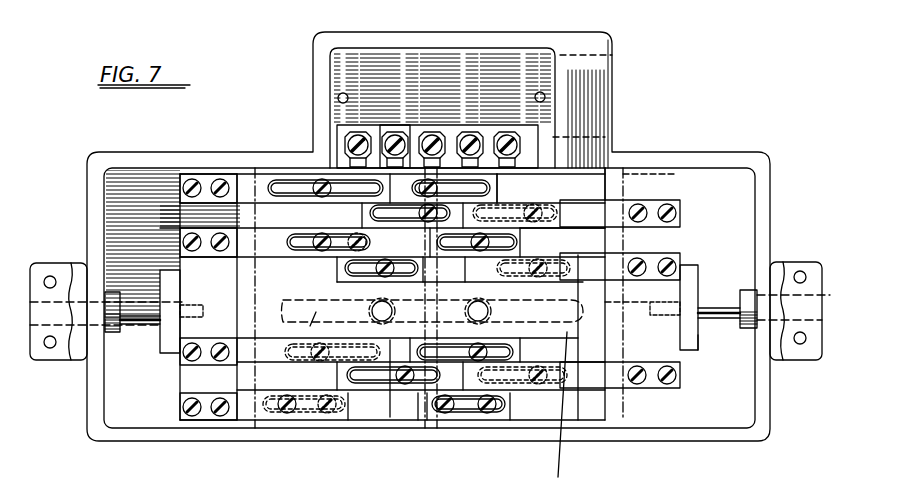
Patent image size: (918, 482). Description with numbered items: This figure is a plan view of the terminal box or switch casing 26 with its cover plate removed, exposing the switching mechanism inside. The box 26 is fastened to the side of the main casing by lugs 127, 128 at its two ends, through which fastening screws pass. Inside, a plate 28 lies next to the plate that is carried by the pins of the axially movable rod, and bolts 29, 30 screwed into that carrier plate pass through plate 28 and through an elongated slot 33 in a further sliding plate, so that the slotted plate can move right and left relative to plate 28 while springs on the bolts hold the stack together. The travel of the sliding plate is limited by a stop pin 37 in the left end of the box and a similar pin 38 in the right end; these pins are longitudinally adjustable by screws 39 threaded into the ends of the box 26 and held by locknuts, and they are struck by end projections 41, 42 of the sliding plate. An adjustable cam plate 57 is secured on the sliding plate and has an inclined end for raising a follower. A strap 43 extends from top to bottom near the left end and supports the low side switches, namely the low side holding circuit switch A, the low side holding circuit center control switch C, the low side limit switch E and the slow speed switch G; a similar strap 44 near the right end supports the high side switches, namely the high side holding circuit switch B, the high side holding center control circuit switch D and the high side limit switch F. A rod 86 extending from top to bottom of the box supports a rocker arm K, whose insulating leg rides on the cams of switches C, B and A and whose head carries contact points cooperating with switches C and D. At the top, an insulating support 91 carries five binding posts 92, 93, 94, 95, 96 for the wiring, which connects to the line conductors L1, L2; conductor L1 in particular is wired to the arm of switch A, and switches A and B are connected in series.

The terminal box 26 is at (767, 210).
The plate 28 is at (592, 185).
The bolt 29 is at (383, 320).
The bolt 30 is at (487, 320).
The elongated slot 33 is at (292, 417).
The stop pin 37 is at (197, 310).
The pin 38 is at (698, 333).
The screw 39 is at (133, 312).
The end projection 41 is at (635, 340).
The end projection 42 is at (227, 318).
The strap 43 is at (192, 212).
The strap 44 is at (670, 188).
The cam plate 57 is at (320, 185).
The rod 86 is at (432, 333).
The insulating support 91 is at (528, 155).
The binding post 92 is at (345, 137).
The binding post 93 is at (437, 132).
The binding post 94 is at (442, 108).
The binding post 95 is at (473, 128).
The binding post 96 is at (507, 128).
The lug 127 is at (60, 270).
The lug 128 is at (813, 263).
The low side holding circuit switch A is at (217, 180).
The high side holding circuit switch B is at (653, 230).
The low side holding circuit center control switch C is at (207, 230).
The high side holding center control circuit switch D is at (652, 280).
The low side limit switch E is at (203, 363).
The high side limit switch F is at (653, 383).
The slow speed switch G is at (213, 413).
The rocker arm K is at (457, 263).
The line conductor L1 is at (350, 130).
The line conductor L2 is at (392, 132).